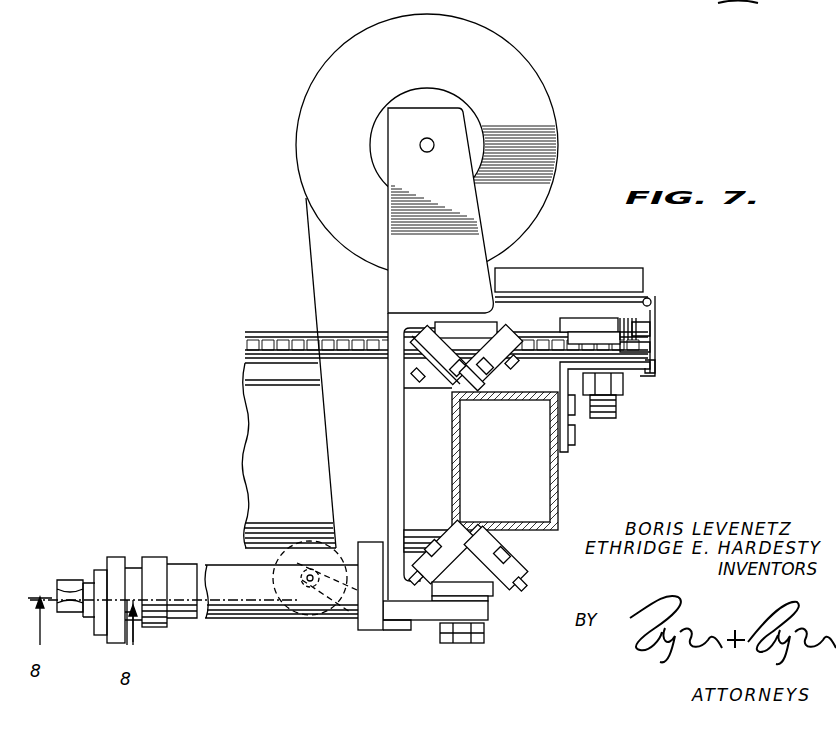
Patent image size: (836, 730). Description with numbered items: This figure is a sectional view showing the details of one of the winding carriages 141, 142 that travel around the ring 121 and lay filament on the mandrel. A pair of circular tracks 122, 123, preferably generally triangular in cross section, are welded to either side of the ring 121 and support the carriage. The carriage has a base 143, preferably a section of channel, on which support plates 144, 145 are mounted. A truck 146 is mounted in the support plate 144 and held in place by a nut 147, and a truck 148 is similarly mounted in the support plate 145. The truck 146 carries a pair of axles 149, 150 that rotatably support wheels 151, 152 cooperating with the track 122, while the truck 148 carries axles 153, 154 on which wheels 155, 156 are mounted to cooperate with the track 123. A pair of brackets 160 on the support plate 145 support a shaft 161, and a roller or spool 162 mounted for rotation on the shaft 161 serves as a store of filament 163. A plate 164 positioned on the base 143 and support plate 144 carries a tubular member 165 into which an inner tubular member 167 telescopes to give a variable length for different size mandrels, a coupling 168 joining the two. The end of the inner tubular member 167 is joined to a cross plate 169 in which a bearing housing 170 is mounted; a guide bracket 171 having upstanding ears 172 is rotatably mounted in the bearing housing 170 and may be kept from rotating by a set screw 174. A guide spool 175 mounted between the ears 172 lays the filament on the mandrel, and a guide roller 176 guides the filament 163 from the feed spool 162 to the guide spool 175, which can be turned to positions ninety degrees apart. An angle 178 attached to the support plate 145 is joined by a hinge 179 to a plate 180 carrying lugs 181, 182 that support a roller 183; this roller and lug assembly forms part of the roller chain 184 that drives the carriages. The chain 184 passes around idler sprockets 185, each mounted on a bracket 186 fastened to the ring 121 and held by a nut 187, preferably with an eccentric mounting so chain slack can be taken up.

The ring 121 is at (558, 483).
The circular track 122 is at (482, 538).
The circular track 123 is at (472, 389).
The winding carriage 141 is at (509, 600).
The winding carriage 142 is at (430, 323).
The base 143 is at (388, 474).
The support plate 144 is at (423, 621).
The support plate 145 is at (398, 320).
The truck 146 is at (488, 598).
The nut 147 is at (476, 643).
The truck 148 is at (468, 322).
The axle 149 is at (410, 541).
The axle 150 is at (509, 562).
The wheel 151 is at (440, 540).
The wheel 152 is at (510, 582).
The axle 153 is at (425, 371).
The axle 154 is at (508, 366).
The wheel 155 is at (452, 375).
The wheel 156 is at (492, 383).
The bracket 160 is at (500, 262).
The shaft 161 is at (420, 147).
The roller or spool 162 is at (553, 104).
The filament 163 is at (312, 282).
The plate 164 is at (375, 634).
The tubular member 165 is at (232, 620).
The inner tubular member 167 is at (135, 568).
The coupling 168 is at (160, 565).
The cross plate 169 is at (118, 645).
The bearing housing 170 is at (106, 635).
The guide bracket 171 is at (97, 572).
The upstanding ear 172 is at (73, 580).
The set screw 174 is at (357, 624).
The guide spool 175 is at (61, 590).
The guide roller 176 is at (280, 560).
The angle 178 is at (626, 273).
The hinge 179 is at (652, 303).
The plate 180 is at (657, 342).
The lug 181 is at (650, 372).
The lug 182 is at (651, 331).
The roller 183 is at (650, 349).
The roller chain 184 is at (265, 333).
The idler sprocket 185 is at (578, 318).
The bracket 186 is at (566, 448).
The nut 187 is at (624, 393).